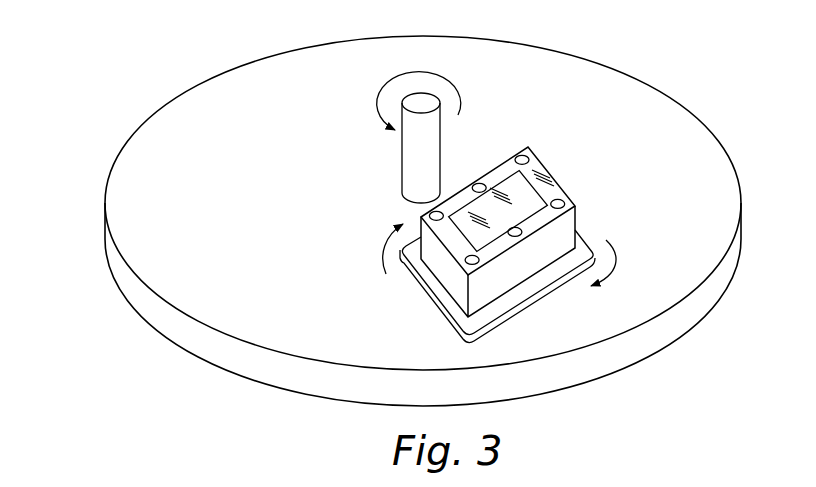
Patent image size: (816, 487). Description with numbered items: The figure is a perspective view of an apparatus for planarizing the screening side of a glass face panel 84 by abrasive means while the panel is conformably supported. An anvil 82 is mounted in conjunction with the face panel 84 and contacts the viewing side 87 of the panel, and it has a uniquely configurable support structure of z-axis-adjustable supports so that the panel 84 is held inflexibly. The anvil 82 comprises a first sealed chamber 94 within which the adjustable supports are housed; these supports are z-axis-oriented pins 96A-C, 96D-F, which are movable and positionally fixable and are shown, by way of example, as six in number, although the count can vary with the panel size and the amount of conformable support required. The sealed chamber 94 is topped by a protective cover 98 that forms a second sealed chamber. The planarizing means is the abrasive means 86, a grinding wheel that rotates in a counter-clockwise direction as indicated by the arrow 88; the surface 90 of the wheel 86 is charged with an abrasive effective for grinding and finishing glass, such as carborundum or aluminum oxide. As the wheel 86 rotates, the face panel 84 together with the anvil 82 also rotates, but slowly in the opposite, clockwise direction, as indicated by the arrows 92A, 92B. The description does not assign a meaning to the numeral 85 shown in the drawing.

The anvil 82 is at (478, 233).
The face panel 84 is at (519, 283).
The side edge of base plate 85 is at (530, 308).
The abrasive means 86 is at (575, 369).
The viewing side 87 is at (587, 240).
The arrow 88 is at (433, 76).
The surface 90 is at (423, 230).
The arrow 92A is at (387, 240).
The arrow 92B is at (607, 266).
The first sealed chamber 94 is at (463, 232).
The z-axis-oriented pins 96A-C is at (453, 270).
The z-axis-oriented pins 96D-F is at (541, 150).
The protective cover 98 is at (534, 160).